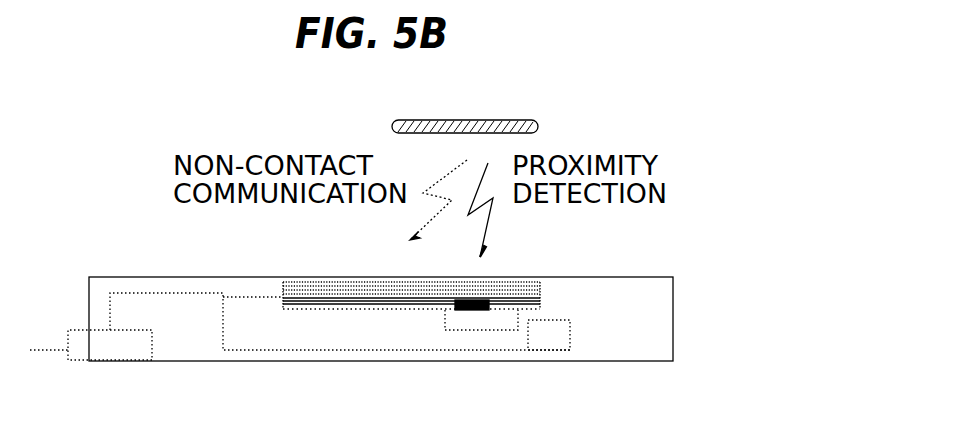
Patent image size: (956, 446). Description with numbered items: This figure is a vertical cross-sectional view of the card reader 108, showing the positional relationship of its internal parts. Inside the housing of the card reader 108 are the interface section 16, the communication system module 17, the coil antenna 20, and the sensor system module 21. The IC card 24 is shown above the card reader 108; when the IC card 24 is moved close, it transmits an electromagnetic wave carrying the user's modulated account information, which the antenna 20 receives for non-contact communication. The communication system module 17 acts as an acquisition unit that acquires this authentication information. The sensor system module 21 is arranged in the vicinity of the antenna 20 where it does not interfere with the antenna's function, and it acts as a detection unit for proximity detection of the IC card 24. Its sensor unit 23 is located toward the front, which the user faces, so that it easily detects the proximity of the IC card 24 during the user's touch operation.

The IC card 24 is at (505, 120).
The card reader 108 is at (618, 277).
The communication system module 17 is at (150, 294).
The interface section 16 is at (120, 362).
The coil antenna 20 is at (303, 281).
The sensor unit 23 is at (465, 310).
The sensor system module 21 is at (520, 328).